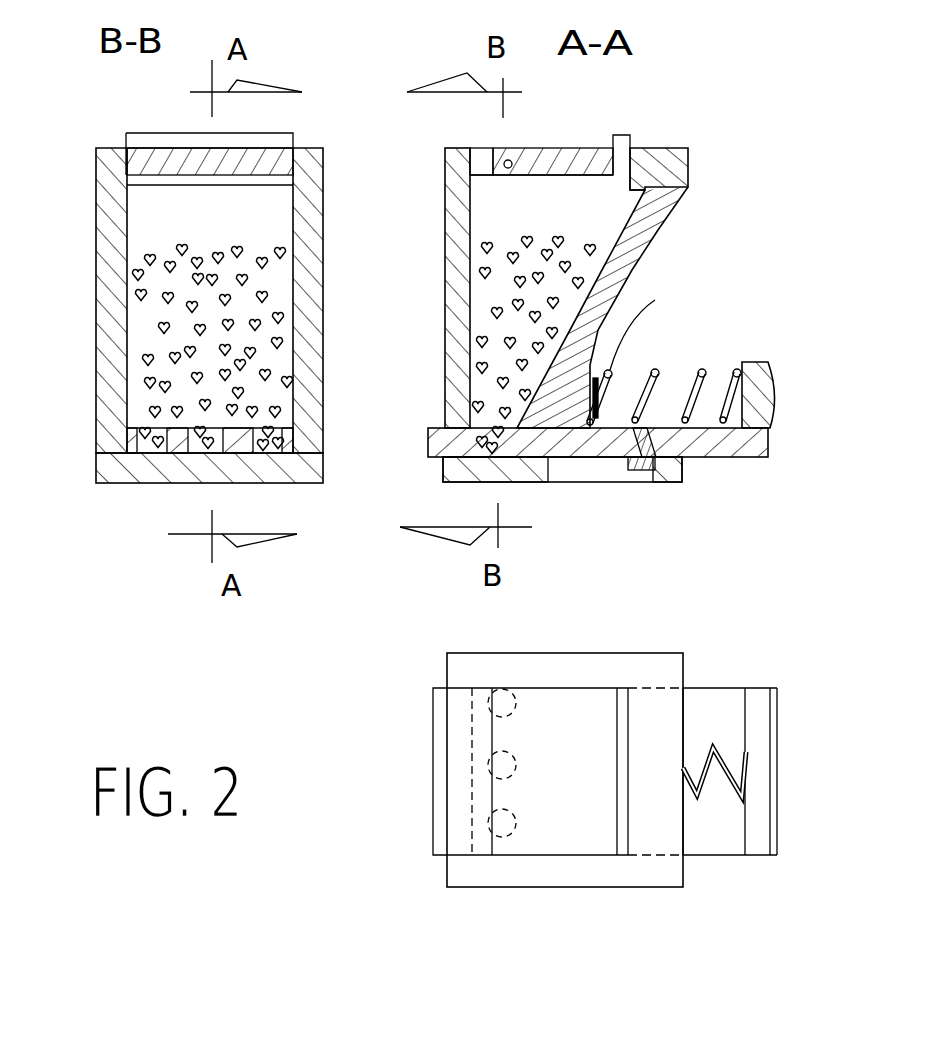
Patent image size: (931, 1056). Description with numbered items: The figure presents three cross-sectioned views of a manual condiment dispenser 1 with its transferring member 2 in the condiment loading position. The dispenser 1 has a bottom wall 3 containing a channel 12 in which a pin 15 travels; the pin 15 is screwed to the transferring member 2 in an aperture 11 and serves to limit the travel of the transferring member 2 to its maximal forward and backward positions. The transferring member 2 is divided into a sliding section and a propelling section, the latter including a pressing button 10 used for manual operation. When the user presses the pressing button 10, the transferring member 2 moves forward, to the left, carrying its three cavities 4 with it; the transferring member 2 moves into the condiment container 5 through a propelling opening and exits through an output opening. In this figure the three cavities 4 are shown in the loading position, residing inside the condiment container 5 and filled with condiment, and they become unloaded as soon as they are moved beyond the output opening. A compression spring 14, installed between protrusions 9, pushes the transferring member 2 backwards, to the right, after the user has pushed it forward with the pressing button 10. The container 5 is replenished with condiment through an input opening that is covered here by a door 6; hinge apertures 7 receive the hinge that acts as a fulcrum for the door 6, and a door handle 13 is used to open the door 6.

The manual condiment dispenser 1 is at (445, 207).
The transferring member 2 is at (290, 437).
The bottom wall 3 is at (470, 475).
The cavities 4 is at (158, 430).
The condiment container 5 is at (500, 322).
The door 6 is at (257, 158).
The hinge apertures 7 is at (508, 160).
The protrusions 9 is at (642, 319).
The pressing button 10 is at (735, 378).
The aperture 11 is at (632, 433).
The channel 12 is at (575, 468).
The door handle 13 is at (143, 142).
The compression spring 14 is at (697, 370).
The pin 15 is at (648, 460).